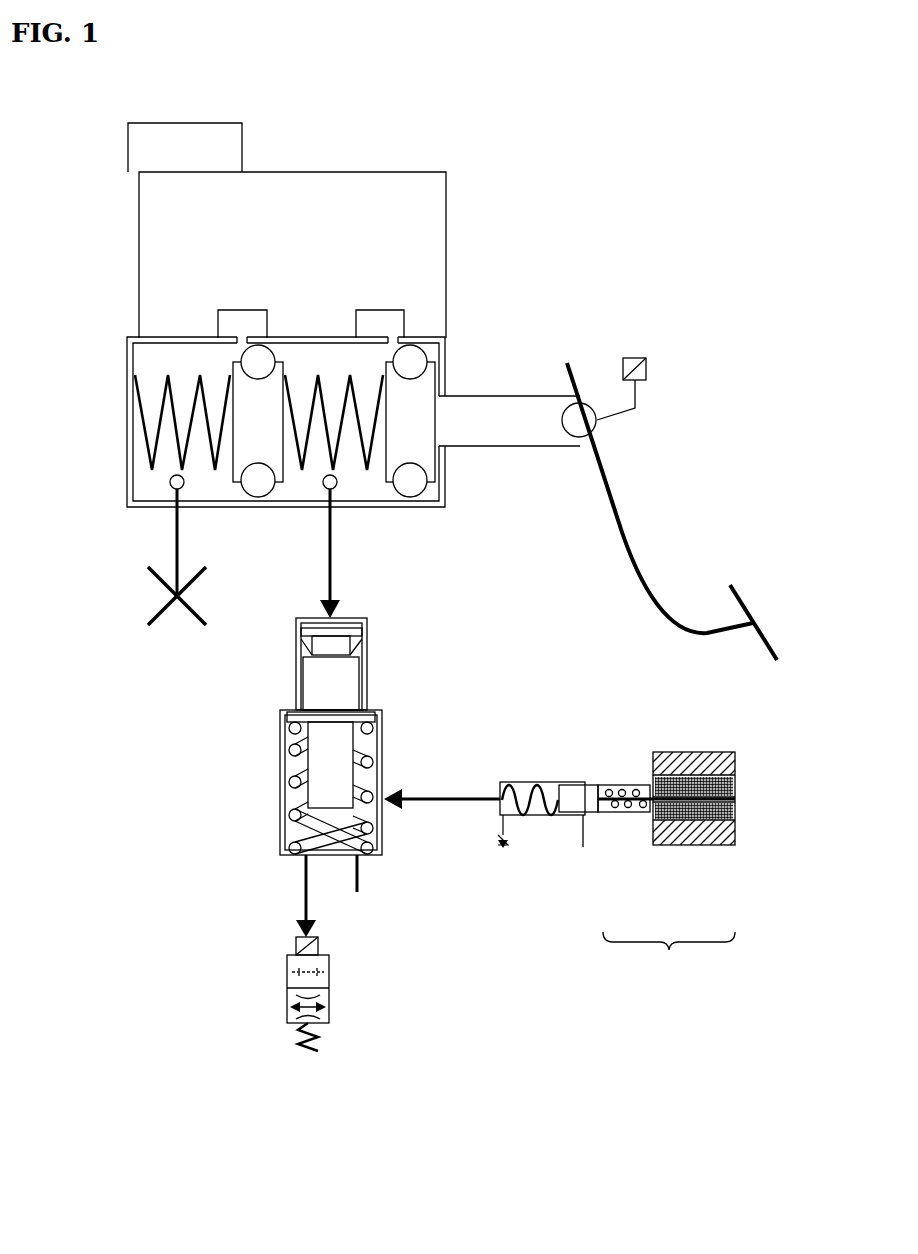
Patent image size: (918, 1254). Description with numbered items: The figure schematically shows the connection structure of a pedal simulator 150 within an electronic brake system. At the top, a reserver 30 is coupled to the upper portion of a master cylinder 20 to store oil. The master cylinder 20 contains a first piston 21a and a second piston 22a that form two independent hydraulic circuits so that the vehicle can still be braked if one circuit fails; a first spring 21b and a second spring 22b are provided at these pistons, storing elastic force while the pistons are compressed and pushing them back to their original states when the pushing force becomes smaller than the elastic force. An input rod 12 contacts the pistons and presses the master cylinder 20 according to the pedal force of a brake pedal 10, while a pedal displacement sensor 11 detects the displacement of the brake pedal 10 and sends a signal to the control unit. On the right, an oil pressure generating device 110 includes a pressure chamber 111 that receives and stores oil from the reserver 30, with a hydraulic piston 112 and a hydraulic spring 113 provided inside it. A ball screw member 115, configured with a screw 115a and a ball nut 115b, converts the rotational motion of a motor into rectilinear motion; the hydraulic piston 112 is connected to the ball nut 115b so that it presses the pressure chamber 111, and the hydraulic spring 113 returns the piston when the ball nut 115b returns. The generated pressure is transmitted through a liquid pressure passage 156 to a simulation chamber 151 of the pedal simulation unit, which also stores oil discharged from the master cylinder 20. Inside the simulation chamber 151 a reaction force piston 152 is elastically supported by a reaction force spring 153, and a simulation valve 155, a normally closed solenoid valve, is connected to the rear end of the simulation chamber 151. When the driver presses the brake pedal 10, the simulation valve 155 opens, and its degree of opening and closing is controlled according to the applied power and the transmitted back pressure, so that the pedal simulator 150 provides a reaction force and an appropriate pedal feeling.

The brake pedal 10 is at (620, 505).
The pedal displacement sensor 11 is at (636, 358).
The input rod 12 is at (500, 440).
The master cylinder 20 is at (127, 383).
The first piston 21a is at (440, 378).
The first spring 21b is at (360, 458).
The second piston 22a is at (232, 455).
The second spring 22b is at (150, 452).
The reserver 30 is at (446, 240).
The oil pressure generating device 110 is at (752, 757).
The pressure chamber 111 is at (527, 815).
The hydraulic piston 112 is at (564, 815).
The hydraulic spring 113 is at (534, 790).
The ball screw member 115 is at (669, 949).
The screw 115a is at (680, 800).
The ball nut 115b is at (616, 815).
The pedal simulator 150 is at (380, 650).
The simulation chamber 151 is at (380, 742).
The reaction force piston 152 is at (350, 685).
The reaction force spring 153 is at (280, 740).
The simulation valve 155 is at (330, 982).
The liquid pressure passage 156 is at (428, 803).